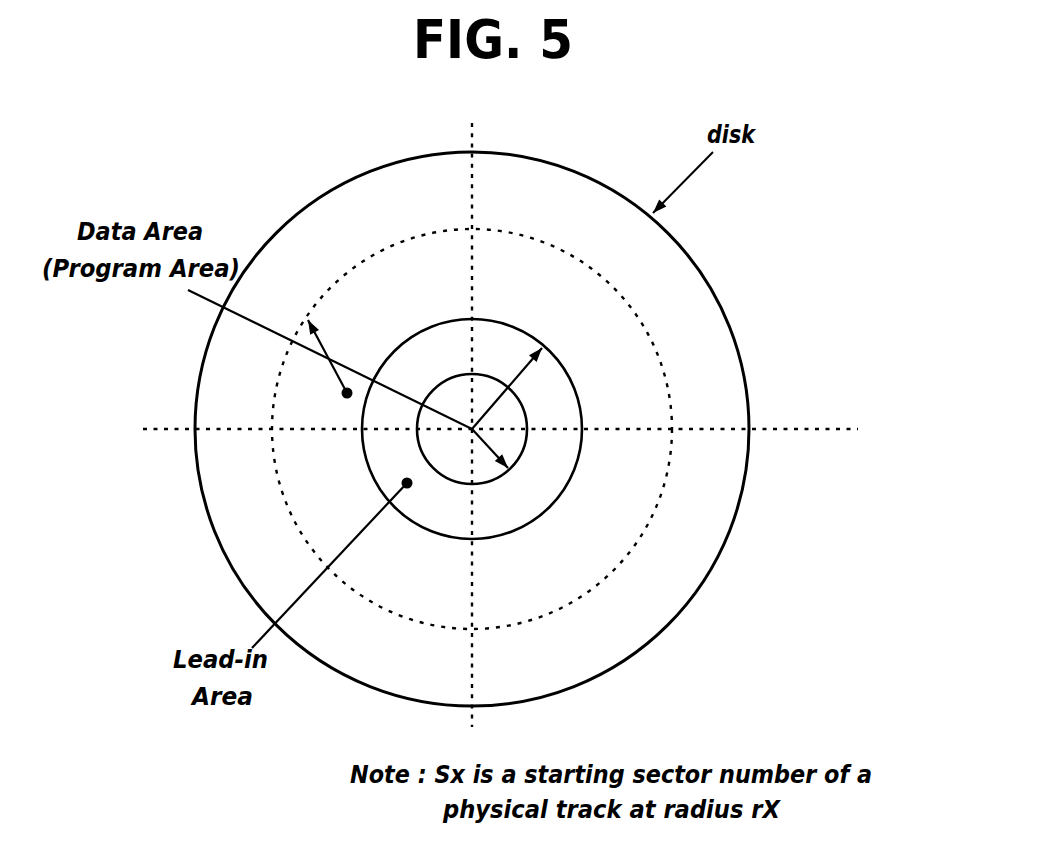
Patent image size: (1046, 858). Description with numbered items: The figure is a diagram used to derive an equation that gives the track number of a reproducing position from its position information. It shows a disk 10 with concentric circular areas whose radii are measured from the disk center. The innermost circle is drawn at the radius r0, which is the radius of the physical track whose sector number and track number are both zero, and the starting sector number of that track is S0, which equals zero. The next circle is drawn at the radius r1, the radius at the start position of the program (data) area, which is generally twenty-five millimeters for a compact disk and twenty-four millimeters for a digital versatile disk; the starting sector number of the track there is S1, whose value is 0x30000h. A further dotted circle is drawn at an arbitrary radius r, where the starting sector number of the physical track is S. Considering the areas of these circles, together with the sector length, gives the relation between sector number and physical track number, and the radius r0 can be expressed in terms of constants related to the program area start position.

The disk 10 is at (613, 123).
The radius r is at (337, 359).
The radius r1 is at (507, 388).
The radius r0 is at (495, 447).
The starting sector number S is at (463, 429).
The starting sector number S1 is at (457, 429).
The starting sector number S0 is at (459, 429).